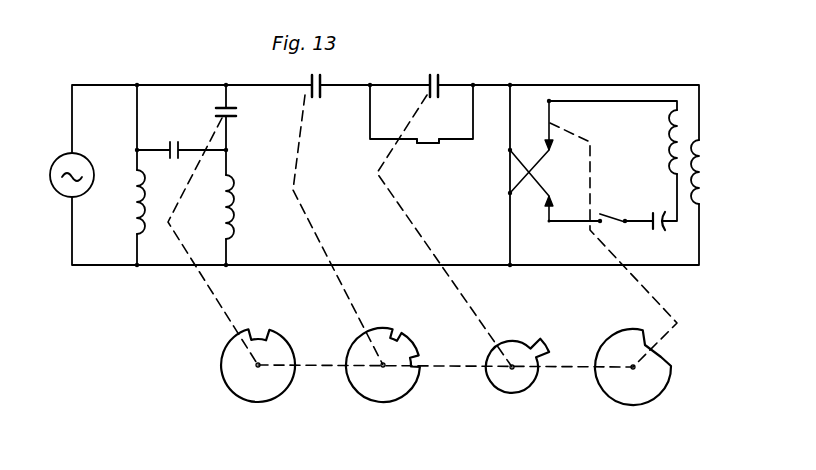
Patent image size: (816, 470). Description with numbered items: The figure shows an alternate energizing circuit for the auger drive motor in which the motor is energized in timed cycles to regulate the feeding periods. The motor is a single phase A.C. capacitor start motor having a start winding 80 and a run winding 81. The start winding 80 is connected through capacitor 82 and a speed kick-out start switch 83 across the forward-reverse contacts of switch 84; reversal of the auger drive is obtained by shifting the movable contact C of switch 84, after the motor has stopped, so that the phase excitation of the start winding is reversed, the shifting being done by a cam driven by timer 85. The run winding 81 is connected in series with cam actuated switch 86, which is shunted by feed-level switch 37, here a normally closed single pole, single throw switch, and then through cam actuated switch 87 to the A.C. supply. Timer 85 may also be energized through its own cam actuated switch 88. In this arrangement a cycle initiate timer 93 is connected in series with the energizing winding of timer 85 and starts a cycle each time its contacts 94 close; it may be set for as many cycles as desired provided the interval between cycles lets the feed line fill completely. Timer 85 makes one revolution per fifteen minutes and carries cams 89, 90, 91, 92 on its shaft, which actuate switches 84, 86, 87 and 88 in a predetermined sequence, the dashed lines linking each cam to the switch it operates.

The feed-level switch 37 is at (428, 143).
The start winding 80 is at (672, 139).
The run winding 81 is at (704, 171).
The capacitor 82 is at (653, 207).
The speed kick-out start switch 83 is at (611, 210).
The forward-reverse switch 84 is at (506, 178).
The timer 85 is at (233, 203).
The cam actuated switch 86 is at (445, 77).
The cam actuated switch 87 is at (305, 98).
The cam actuated switch 88 is at (243, 110).
The cam 89 is at (232, 378).
The cam 90 is at (368, 393).
The cam 91 is at (501, 387).
The cam 92 is at (620, 390).
The cycle initiate timer 93 is at (130, 207).
The contacts 94 is at (178, 142).
The movable contact C is at (549, 214).